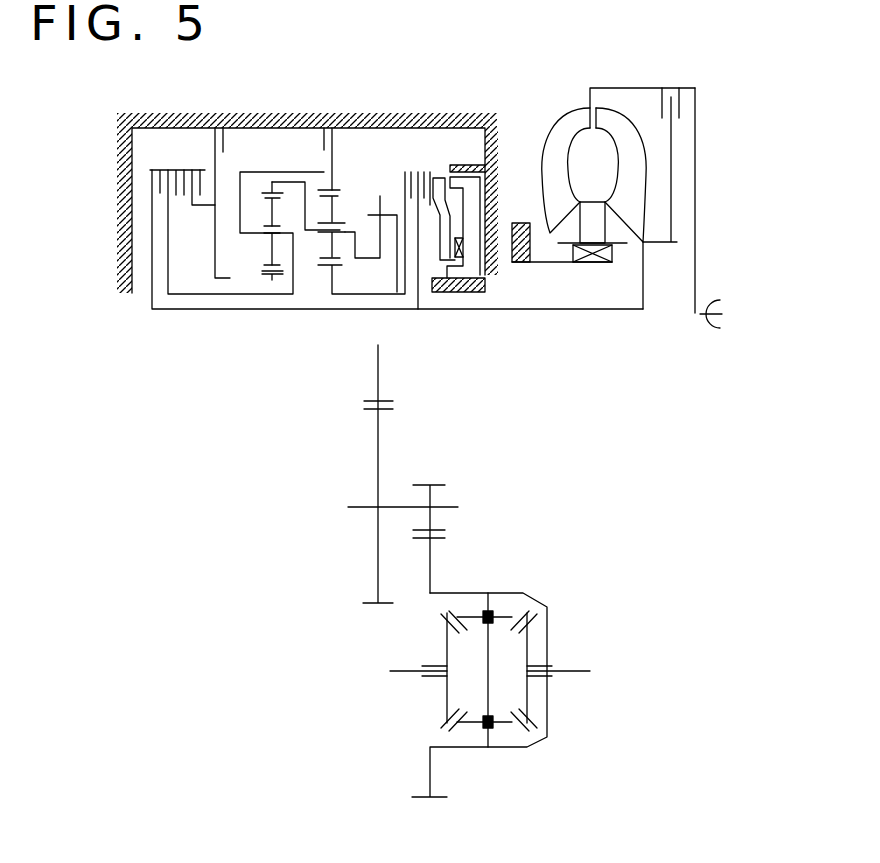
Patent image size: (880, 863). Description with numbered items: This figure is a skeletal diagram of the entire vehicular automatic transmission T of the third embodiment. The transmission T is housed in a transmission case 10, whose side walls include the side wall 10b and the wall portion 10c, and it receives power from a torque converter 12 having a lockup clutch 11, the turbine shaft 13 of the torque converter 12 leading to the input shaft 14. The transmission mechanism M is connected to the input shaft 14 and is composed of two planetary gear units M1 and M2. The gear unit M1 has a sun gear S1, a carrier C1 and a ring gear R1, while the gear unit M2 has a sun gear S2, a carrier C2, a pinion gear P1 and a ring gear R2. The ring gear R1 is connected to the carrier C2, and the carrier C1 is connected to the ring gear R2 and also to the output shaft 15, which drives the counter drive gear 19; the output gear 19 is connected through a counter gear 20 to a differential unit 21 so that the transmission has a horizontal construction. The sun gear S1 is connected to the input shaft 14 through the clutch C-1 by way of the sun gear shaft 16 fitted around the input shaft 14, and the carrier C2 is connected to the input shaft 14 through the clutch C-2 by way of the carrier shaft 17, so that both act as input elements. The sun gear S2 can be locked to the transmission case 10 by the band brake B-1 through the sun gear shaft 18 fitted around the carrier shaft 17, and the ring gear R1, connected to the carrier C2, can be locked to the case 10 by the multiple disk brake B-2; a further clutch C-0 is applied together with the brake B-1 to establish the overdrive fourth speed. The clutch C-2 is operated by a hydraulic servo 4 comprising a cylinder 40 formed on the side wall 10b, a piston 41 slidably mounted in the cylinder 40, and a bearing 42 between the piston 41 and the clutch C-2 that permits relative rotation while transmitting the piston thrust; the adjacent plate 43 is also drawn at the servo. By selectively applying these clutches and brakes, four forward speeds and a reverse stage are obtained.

The transmission case 10 is at (130, 214).
The side wall 10b is at (150, 128).
The case wall portion 10c is at (470, 128).
The automatic transmission T is at (425, 112).
The brake B-1 is at (190, 128).
The brake B-2 is at (308, 128).
The clutch C-0 is at (158, 167).
The clutch C-1 is at (442, 173).
The clutch C-2 is at (210, 173).
The carrier shaft 17 is at (196, 296).
The sun gear shaft 18 is at (215, 277).
The pinion gear P1 is at (268, 193).
The ring gear R2 is at (273, 185).
The carrier C2 is at (283, 225).
The sun gear S2 is at (272, 278).
The ring gear R1 is at (338, 186).
The carrier C1 is at (313, 232).
The sun gear S1 is at (336, 266).
The output shaft 15 is at (372, 215).
The counter drive gear 19 is at (375, 216).
The input shaft 14 is at (419, 311).
The cylinder 40 is at (490, 172).
The bearing 42 is at (462, 250).
The support plate 43 is at (443, 290).
The piston 41 is at (488, 300).
The hydraulic servo 4 is at (492, 270).
The torque converter 12 is at (590, 100).
The lockup clutch 11 is at (682, 100).
The turbine shaft 13 is at (603, 311).
The sun gear shaft 16 is at (378, 309).
The counter gear 20 is at (418, 466).
The differential unit 21 is at (518, 590).
The gear unit M2 is at (272, 318).
The gear unit M1 is at (330, 316).
The transmission mechanism M is at (341, 370).